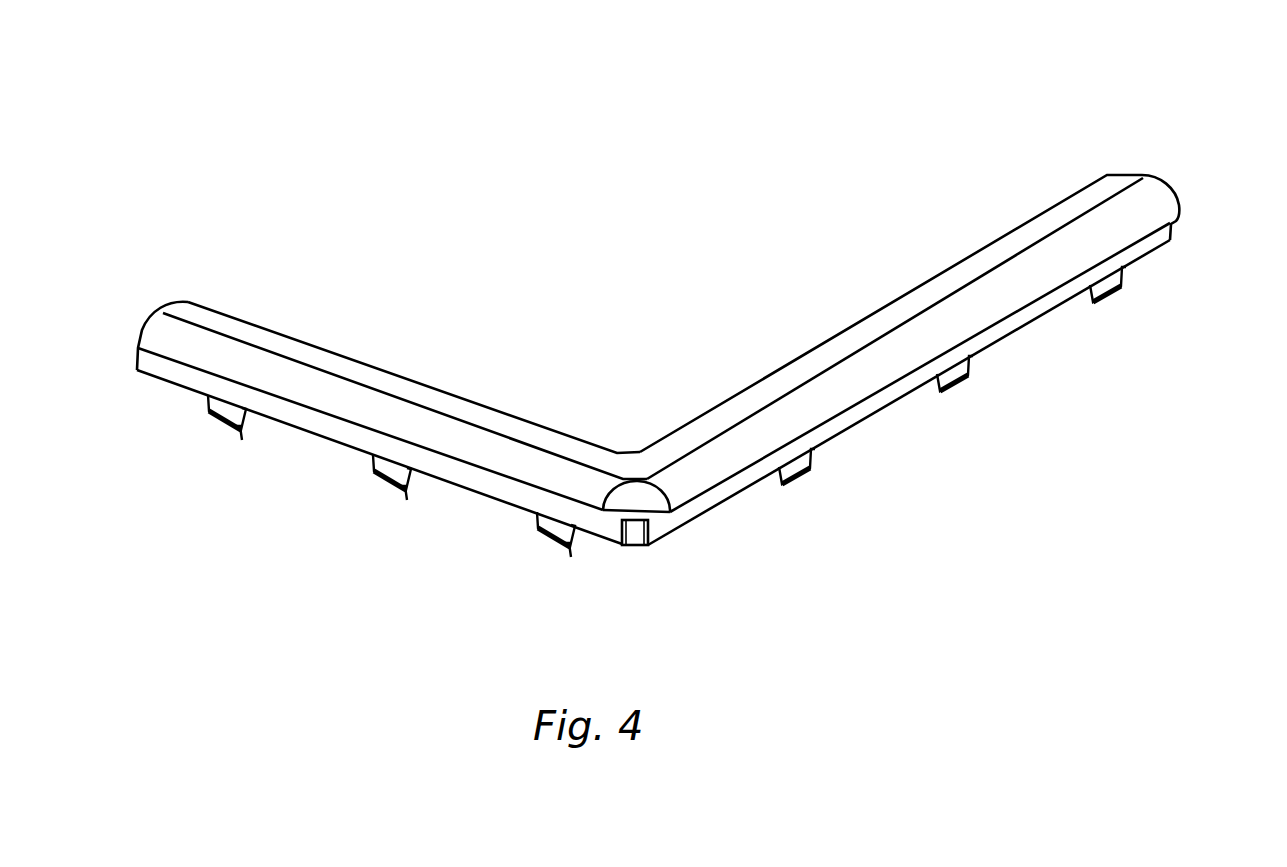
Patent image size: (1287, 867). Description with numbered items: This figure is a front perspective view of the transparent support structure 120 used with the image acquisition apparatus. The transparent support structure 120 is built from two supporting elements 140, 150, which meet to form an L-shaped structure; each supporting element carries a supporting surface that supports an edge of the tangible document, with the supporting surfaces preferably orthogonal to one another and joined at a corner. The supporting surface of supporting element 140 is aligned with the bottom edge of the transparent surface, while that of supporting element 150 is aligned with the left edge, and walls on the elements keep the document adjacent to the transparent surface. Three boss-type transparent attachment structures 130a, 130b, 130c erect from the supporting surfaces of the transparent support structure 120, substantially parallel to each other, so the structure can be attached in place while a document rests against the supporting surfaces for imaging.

The transparent support structure 120 is at (1132, 172).
The boss-type transparent attachment structure 130a is at (780, 473).
The boss-type transparent attachment structure 130b is at (555, 523).
The boss-type transparent attachment structure 130c is at (953, 372).
The supporting element 140 is at (673, 598).
The supporting element 150 is at (608, 570).